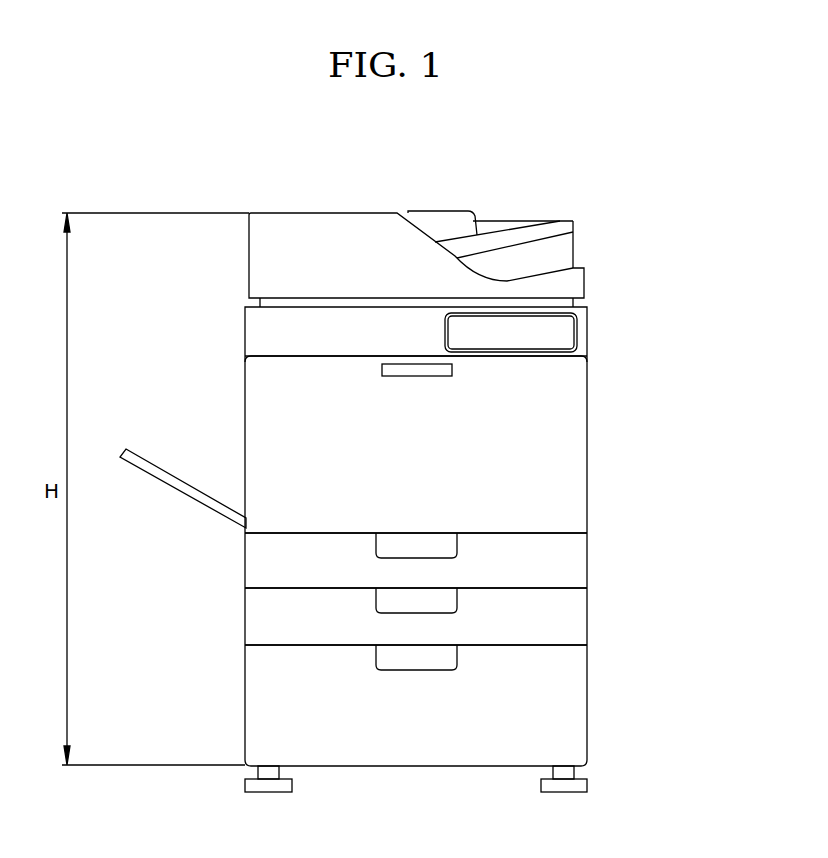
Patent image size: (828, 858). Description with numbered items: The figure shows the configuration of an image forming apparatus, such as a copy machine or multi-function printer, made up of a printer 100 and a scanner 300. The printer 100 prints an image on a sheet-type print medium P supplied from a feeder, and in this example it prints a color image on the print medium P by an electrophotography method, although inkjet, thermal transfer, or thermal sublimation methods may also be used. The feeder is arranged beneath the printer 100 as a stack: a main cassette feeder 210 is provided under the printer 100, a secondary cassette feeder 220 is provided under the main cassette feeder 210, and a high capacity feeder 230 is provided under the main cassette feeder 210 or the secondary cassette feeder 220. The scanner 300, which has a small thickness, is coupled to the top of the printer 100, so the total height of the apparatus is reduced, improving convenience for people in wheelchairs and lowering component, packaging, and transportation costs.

The printer 100 is at (599, 401).
The scanner 300 is at (598, 242).
The main cassette feeder 210 is at (578, 566).
The secondary cassette feeder 220 is at (578, 621).
The high capacity feeder 230 is at (578, 696).
The print medium P is at (246, 458).